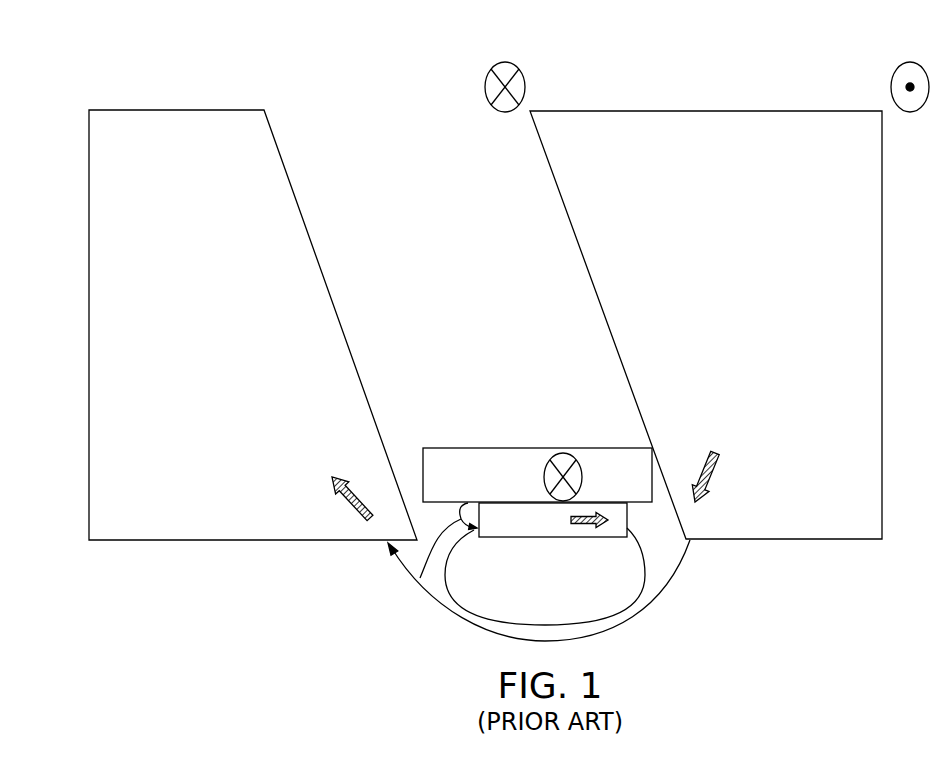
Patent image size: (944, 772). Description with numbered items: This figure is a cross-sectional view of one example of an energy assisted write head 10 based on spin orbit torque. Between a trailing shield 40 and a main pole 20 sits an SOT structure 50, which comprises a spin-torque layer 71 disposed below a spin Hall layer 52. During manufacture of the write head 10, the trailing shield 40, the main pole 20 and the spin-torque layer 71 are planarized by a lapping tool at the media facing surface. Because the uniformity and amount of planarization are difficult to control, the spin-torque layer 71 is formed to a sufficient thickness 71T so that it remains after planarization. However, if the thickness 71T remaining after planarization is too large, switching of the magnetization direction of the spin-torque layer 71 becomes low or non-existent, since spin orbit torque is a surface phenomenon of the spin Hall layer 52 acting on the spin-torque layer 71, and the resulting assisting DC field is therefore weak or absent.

The energy assisted write head 10 is at (103, 73).
The main pole 20 is at (761, 326).
The trailing shield 40 is at (204, 325).
The SOT structure 50 is at (516, 428).
The spin Hall layer 52 is at (511, 491).
The spin-torque layer 71 is at (533, 531).
The thickness 71T is at (412, 590).